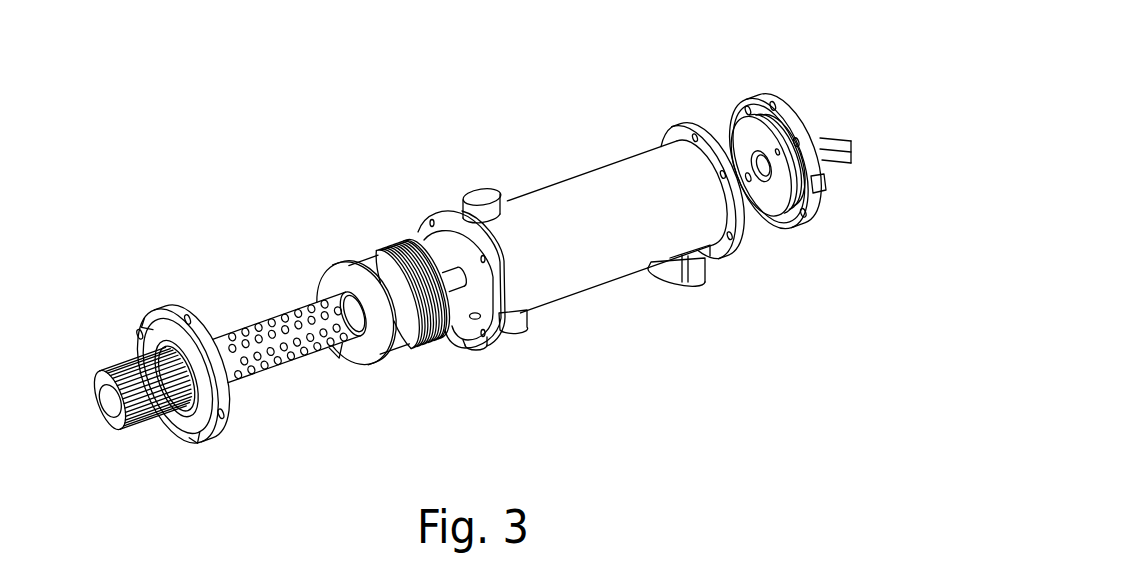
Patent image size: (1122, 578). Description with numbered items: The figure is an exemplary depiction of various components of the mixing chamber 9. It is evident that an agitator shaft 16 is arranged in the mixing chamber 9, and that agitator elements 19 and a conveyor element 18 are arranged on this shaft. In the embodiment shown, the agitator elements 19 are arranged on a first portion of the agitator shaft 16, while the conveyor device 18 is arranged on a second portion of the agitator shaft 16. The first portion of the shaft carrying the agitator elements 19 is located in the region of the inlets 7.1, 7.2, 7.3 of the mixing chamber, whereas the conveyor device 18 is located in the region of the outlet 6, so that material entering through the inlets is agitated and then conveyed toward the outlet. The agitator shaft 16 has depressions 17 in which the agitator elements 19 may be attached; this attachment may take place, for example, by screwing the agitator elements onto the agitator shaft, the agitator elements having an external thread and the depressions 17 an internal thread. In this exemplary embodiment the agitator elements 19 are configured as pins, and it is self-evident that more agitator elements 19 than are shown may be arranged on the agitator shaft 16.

The outlet 6 is at (667, 286).
The inlet 7.1 is at (481, 187).
The inlet 7.2 is at (475, 349).
The inlet 7.3 is at (512, 337).
The mixing chamber 9 is at (635, 172).
The agitator shaft 16 is at (243, 333).
The depressions 17 is at (262, 381).
The conveyor element 18 is at (358, 262).
The agitator elements 19 is at (291, 365).